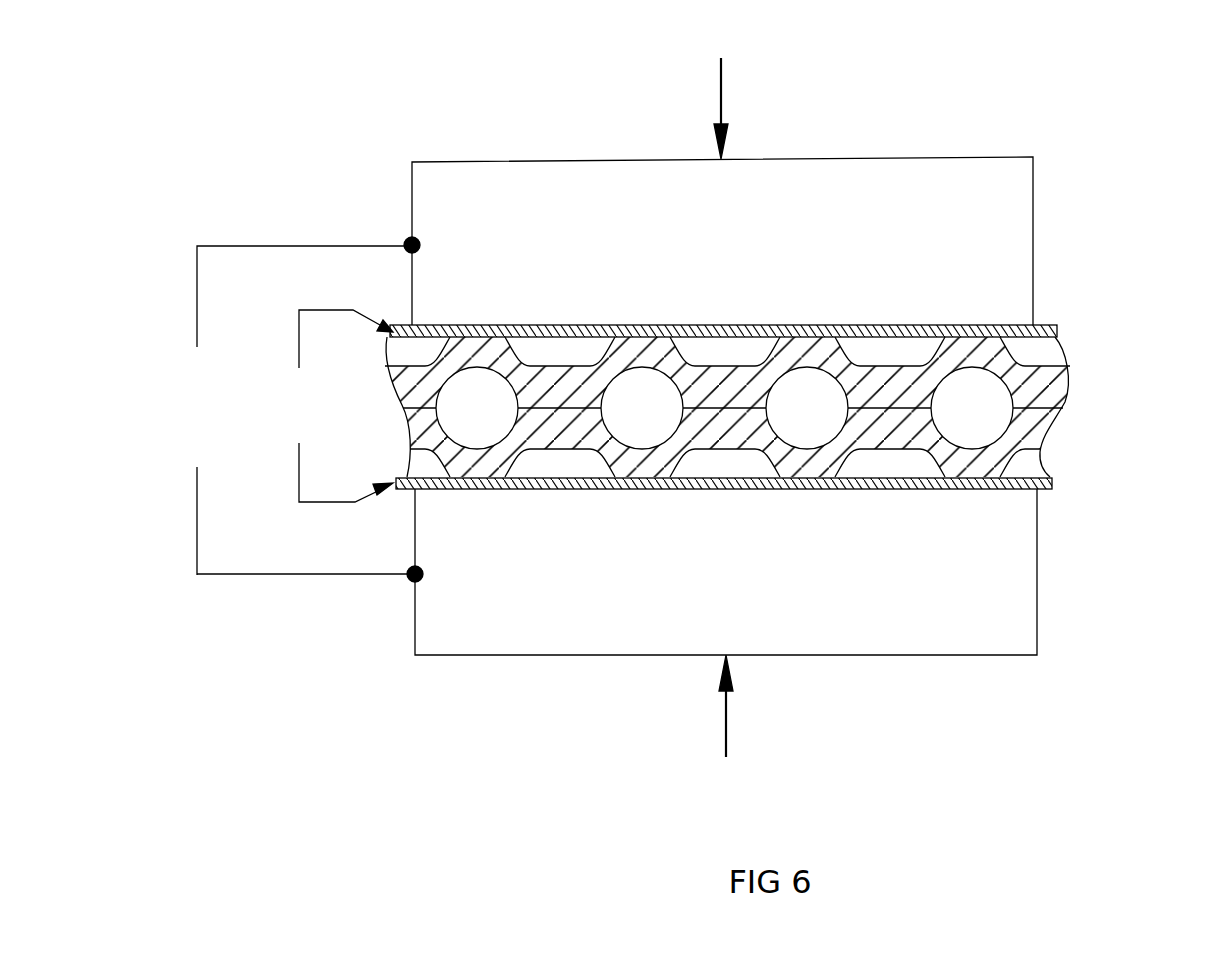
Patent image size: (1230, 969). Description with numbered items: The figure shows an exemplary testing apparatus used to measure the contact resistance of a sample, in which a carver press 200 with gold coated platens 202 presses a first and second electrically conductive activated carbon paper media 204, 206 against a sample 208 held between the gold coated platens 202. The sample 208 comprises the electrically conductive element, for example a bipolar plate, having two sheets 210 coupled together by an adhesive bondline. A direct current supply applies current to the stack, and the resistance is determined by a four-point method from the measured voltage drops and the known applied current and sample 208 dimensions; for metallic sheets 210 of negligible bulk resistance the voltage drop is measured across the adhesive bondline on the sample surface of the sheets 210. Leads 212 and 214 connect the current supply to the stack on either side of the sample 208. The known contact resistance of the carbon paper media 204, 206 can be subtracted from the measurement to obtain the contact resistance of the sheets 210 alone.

The carver press 200 is at (405, 134).
The gold coated platens 202 is at (540, 178).
The first electrically conductive activated carbon paper media 204 is at (1040, 323).
The second electrically conductive activated carbon paper media 206 is at (1043, 488).
The sample 208 is at (1065, 402).
The sheets 210 is at (1066, 374).
The upper electrical lead 212 is at (390, 337).
The lower electrical lead 214 is at (406, 485).